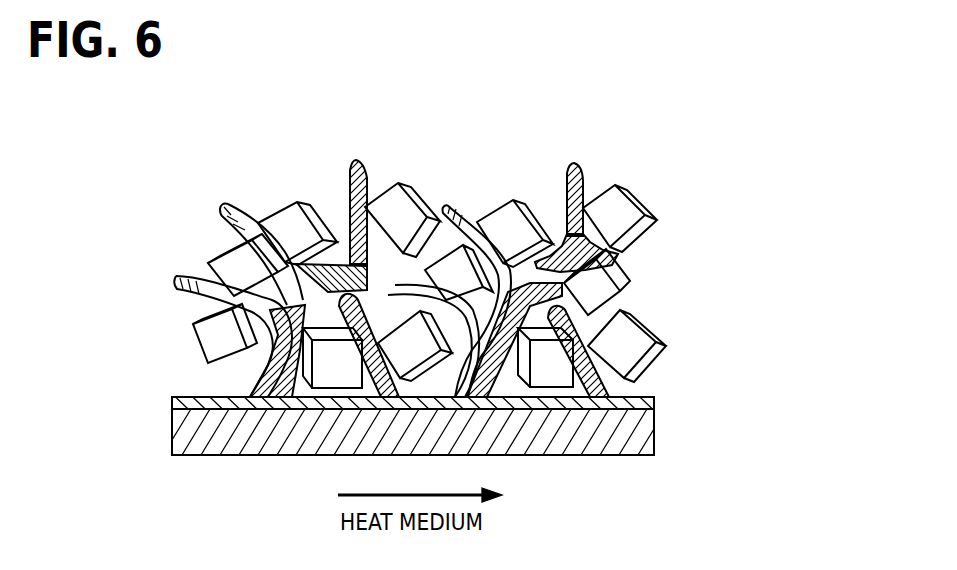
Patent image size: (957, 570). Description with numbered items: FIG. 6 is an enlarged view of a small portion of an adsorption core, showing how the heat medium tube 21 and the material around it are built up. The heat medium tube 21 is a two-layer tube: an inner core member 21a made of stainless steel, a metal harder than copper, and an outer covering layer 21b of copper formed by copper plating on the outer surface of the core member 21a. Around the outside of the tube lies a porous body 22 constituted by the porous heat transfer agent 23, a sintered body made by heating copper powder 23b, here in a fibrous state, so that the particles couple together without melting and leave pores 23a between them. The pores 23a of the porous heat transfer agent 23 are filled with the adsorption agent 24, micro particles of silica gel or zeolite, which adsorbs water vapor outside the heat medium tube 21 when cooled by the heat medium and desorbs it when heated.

The heat medium tube 21 is at (495, 419).
The core member 21a is at (640, 433).
The covering layer 21b is at (643, 405).
The porous body 22 is at (545, 193).
The porous heat transfer agent 23 is at (458, 213).
The pores 23a is at (560, 292).
The copper powder 23b is at (343, 252).
The adsorption agent 24 is at (617, 212).